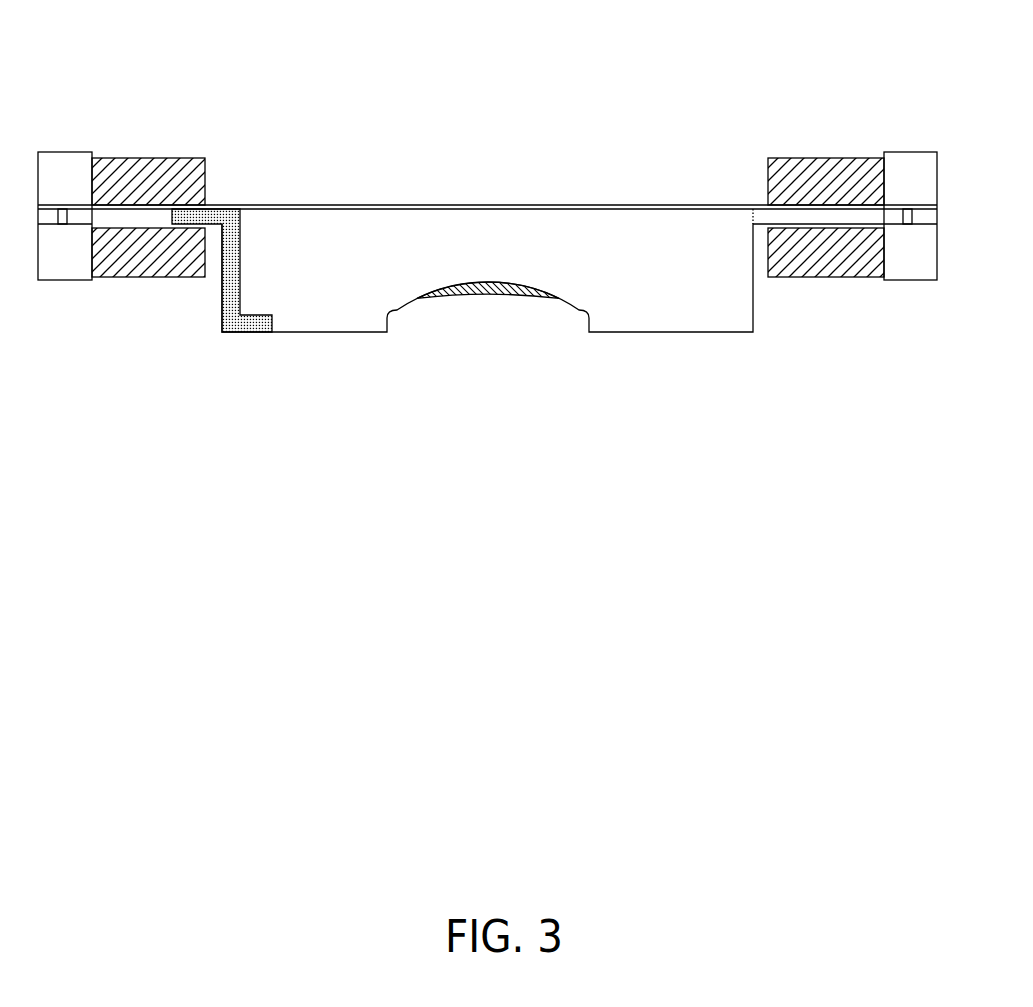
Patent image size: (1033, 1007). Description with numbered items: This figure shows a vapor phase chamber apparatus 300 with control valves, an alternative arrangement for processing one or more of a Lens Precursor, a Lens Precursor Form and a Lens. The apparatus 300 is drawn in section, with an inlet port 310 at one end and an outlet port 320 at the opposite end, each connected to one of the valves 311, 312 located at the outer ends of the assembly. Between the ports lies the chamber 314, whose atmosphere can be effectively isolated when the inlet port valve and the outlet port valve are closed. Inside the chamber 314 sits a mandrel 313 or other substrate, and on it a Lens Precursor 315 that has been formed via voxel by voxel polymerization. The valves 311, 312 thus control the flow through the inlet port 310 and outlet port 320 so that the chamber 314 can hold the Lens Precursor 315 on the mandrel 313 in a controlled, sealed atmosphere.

The apparatus 300 is at (487, 279).
The inlet port 310 is at (162, 277).
The valve 311 is at (67, 280).
The valve 312 is at (908, 280).
The mandrel 313 is at (428, 336).
The chamber 314 is at (488, 268).
The Lens Precursor 315 is at (480, 296).
The outlet port 320 is at (810, 277).